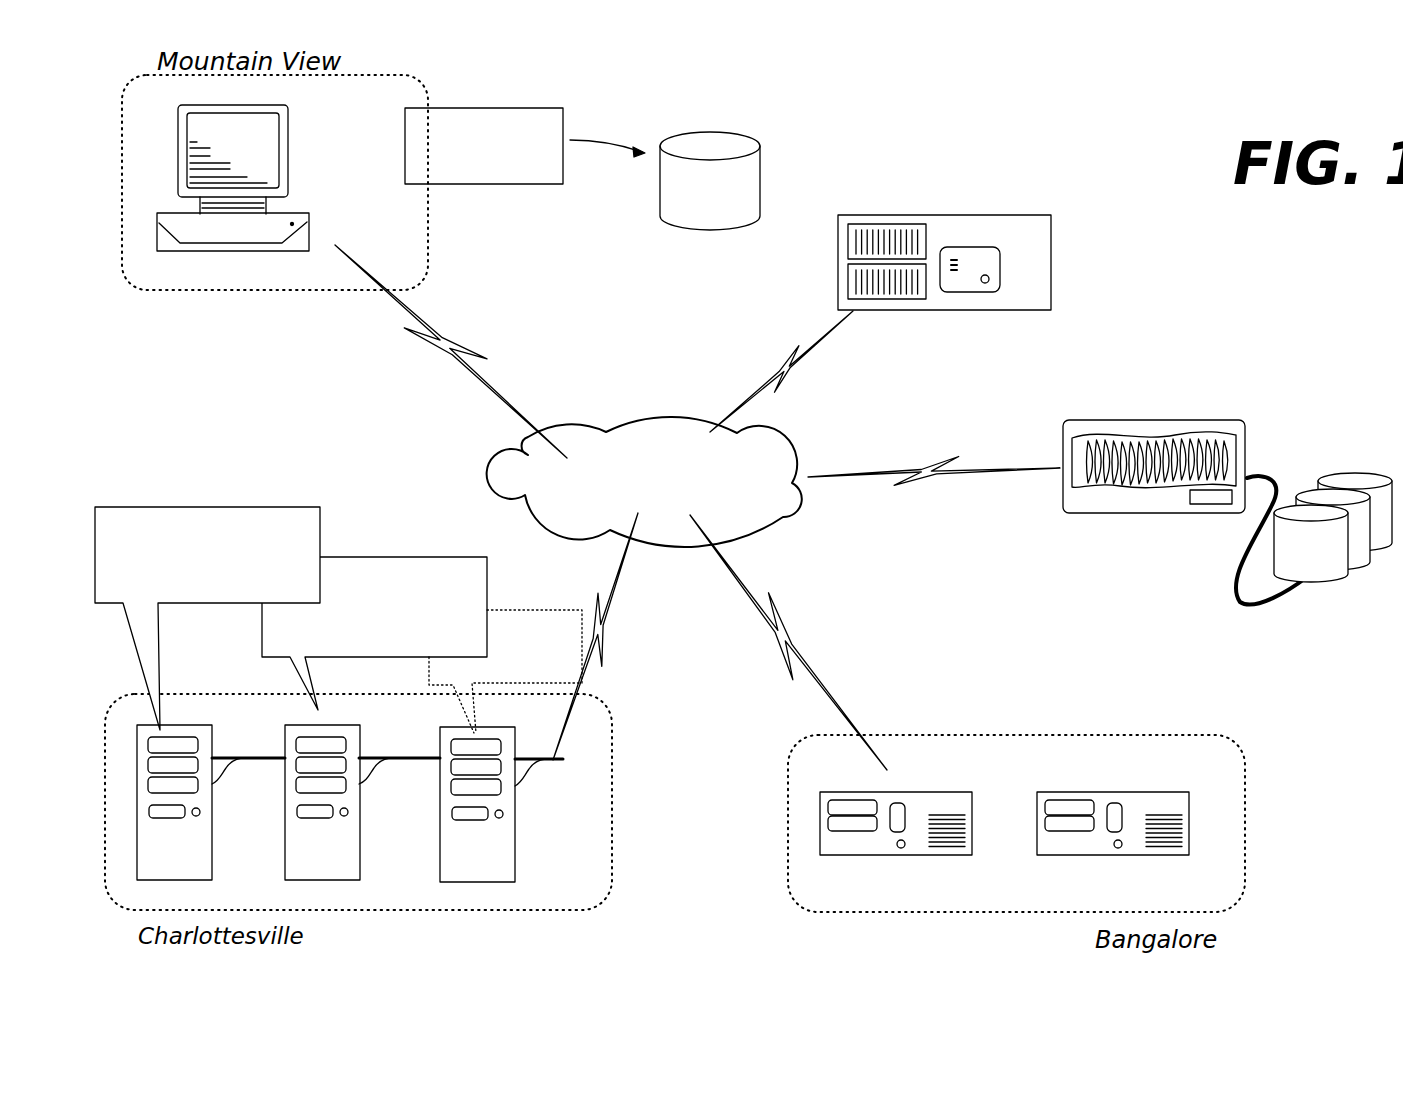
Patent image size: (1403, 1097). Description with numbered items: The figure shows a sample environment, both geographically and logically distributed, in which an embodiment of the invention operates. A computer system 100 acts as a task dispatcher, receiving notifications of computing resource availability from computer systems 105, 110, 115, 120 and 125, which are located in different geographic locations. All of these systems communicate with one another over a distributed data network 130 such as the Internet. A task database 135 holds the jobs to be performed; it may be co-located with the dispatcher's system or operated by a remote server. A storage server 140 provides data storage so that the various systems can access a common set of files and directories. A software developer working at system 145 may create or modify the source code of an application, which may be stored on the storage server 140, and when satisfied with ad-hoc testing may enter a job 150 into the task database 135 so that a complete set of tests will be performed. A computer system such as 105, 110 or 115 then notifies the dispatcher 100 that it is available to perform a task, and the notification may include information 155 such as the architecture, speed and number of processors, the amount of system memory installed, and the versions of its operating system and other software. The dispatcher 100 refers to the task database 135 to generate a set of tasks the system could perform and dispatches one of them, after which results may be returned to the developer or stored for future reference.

The computer system 100 is at (1028, 310).
The computer system 105 is at (212, 868).
The computer system 110 is at (359, 868).
The computer system 115 is at (515, 870).
The computer system 120 is at (955, 855).
The computer system 125 is at (1173, 855).
The distributed data network 130 is at (784, 511).
The task database 135 is at (752, 219).
The storage server 140 is at (1237, 420).
The system 145 is at (302, 213).
The job 150 is at (542, 108).
The information 155 is at (363, 556).